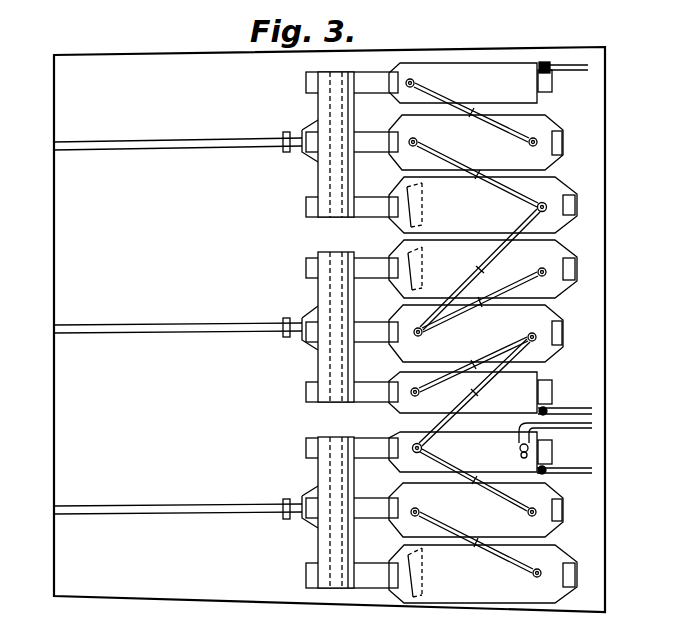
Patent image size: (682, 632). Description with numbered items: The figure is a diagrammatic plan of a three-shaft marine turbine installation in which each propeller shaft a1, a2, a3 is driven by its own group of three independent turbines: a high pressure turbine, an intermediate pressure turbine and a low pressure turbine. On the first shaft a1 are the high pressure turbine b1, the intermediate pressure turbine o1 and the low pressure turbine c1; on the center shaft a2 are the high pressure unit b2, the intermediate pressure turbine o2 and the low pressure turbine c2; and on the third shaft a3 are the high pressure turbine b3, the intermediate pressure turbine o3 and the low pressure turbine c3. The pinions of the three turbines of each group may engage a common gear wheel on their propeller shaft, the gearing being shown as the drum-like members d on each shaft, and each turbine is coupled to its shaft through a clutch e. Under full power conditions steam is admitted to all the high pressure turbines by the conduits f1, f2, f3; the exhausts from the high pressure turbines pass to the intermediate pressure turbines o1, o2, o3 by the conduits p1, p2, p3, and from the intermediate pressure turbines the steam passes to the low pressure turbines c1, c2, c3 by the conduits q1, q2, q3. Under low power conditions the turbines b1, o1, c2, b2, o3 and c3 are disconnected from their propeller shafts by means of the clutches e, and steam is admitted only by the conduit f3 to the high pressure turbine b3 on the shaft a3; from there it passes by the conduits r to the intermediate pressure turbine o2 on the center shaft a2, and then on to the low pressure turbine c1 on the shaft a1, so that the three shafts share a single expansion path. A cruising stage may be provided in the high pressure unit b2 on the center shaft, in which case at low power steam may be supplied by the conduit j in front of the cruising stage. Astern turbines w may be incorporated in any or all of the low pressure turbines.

The shaft a1 is at (118, 149).
The center shaft a2 is at (107, 334).
The shaft a3 is at (99, 515).
The cylinder drum d is at (337, 492).
The clutch e is at (377, 575).
The high pressure turbine b1 is at (470, 83).
The high pressure unit b2 is at (470, 392).
The high pressure turbine b3 is at (470, 452).
The intermediate pressure turbine o1 is at (476, 142).
The intermediate pressure turbine o2 is at (476, 333).
The intermediate pressure turbine o3 is at (476, 510).
The low pressure turbine c1 is at (483, 205).
The low pressure turbine c2 is at (483, 269).
The low pressure turbine c3 is at (483, 574).
The conduit p1 is at (478, 115).
The conduit p2 is at (432, 382).
The conduit p3 is at (505, 503).
The conduit q1 is at (514, 192).
The conduit q2 is at (527, 277).
The conduit q3 is at (522, 569).
The conduit r is at (480, 334).
The astern turbine w is at (427, 578).
The conduit f1 is at (576, 72).
The conduit f2 is at (583, 408).
The conduit f3 is at (585, 465).
The conduit j is at (587, 478).